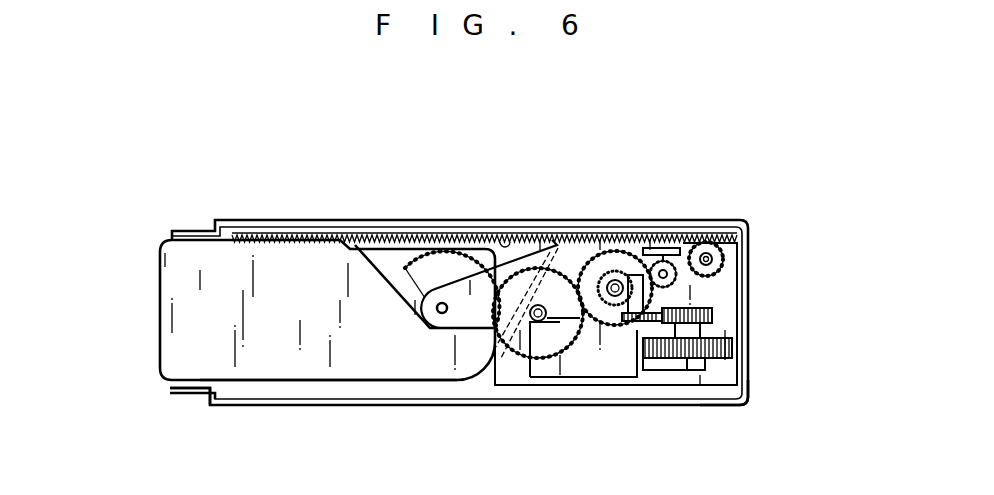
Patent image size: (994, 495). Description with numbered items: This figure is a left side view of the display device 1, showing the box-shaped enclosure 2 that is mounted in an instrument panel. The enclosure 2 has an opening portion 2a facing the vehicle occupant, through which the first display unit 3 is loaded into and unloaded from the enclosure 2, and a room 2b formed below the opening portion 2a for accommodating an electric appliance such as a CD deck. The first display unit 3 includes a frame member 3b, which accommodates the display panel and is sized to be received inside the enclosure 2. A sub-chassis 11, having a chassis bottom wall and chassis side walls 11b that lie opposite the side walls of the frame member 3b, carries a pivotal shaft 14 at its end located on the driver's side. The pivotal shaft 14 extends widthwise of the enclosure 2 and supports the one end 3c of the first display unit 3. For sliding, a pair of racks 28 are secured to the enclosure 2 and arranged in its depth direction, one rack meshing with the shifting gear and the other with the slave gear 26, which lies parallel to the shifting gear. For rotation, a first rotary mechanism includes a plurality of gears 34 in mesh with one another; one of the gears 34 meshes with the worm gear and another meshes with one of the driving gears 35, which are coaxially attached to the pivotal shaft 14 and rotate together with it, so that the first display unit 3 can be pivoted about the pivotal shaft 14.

The display device 1 is at (618, 120).
The enclosure 2 is at (298, 220).
The opening portion 2a is at (170, 383).
The room 2b is at (749, 395).
The first display unit 3 is at (148, 282).
The frame member 3b is at (290, 350).
The one end of the first display unit 3c is at (420, 363).
The sub-chassis 11 is at (740, 283).
The chassis side walls 11b is at (703, 378).
The pivotal shaft 14 is at (443, 313).
The slave gear 26 is at (752, 257).
The racks 28 is at (513, 240).
The gears 34 is at (566, 272).
The driving gears 35 is at (422, 250).